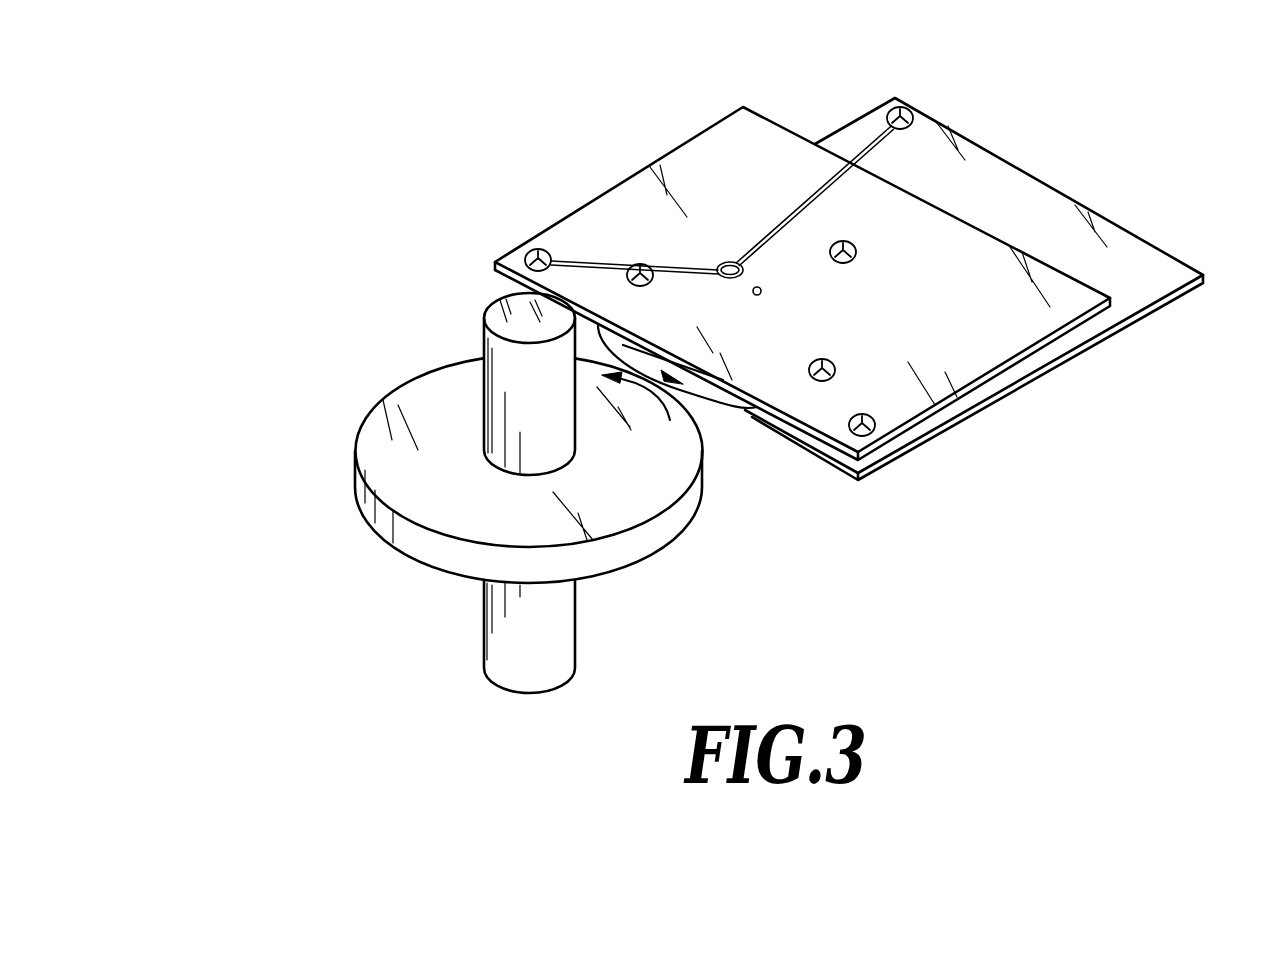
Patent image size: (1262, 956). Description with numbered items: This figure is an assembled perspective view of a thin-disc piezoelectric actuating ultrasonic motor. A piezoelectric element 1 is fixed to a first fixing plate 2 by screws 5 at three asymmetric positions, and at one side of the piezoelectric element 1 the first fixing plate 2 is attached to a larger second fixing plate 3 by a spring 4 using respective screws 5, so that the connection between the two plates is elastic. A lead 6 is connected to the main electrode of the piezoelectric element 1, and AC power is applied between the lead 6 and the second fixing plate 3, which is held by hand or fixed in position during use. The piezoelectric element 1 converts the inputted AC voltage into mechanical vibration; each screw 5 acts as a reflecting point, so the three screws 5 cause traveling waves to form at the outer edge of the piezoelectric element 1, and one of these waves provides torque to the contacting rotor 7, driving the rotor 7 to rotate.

The piezoelectric element 1 is at (707, 393).
The first fixing plate 2 is at (752, 132).
The second fixing plate 3 is at (1120, 237).
The spring 4 is at (683, 263).
The screws 5 is at (903, 108).
The lead 6 is at (762, 291).
The rotor 7 is at (382, 440).